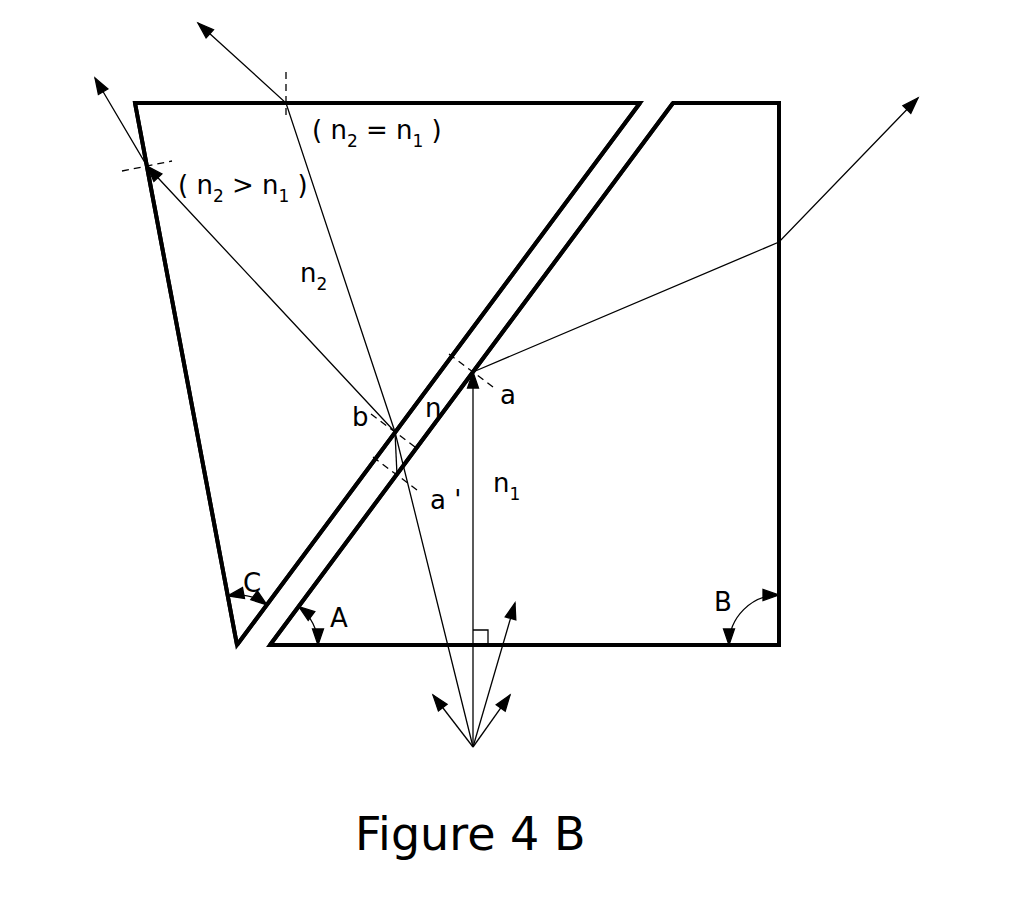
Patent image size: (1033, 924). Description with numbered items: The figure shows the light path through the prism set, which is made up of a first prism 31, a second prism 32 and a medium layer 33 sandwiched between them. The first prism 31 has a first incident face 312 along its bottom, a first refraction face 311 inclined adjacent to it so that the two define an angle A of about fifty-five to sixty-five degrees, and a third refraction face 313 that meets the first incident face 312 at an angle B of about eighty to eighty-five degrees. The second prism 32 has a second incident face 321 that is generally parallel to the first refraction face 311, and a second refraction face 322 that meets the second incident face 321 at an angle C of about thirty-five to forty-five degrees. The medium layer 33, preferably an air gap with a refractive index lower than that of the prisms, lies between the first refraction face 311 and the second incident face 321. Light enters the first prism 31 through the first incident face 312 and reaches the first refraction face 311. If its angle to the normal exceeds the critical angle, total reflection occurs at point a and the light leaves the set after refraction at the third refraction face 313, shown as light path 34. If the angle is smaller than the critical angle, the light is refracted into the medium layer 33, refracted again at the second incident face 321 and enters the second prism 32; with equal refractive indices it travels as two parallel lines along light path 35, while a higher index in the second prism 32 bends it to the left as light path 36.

The first prism 31 is at (640, 508).
The second prism 32 is at (497, 193).
The medium layer 33 is at (664, 111).
The light path 34 is at (717, 228).
The light path 35 is at (316, 379).
The light path 36 is at (234, 239).
The first refraction face 311 is at (642, 148).
The first incident face 312 is at (570, 645).
The third refraction face 313 is at (777, 375).
The second incident face 321 is at (483, 315).
The second refraction face 322 is at (203, 478).